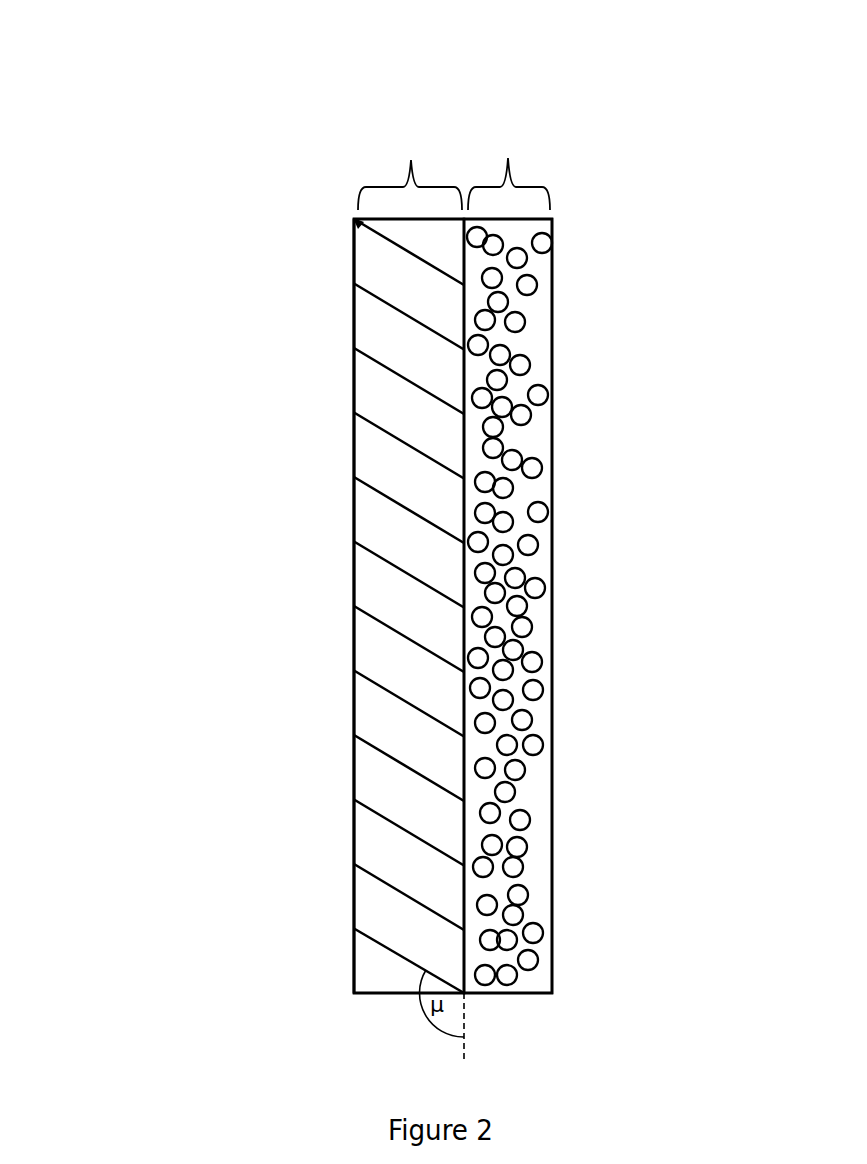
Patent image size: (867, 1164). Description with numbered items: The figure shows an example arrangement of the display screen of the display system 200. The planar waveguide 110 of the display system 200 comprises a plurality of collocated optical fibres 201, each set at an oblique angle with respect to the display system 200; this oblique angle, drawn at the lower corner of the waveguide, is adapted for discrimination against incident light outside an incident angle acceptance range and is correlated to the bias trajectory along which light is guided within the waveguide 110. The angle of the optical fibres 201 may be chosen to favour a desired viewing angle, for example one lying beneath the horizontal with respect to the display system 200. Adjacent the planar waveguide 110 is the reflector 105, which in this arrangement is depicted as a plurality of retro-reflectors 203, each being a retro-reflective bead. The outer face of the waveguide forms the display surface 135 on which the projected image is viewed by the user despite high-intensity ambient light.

The display system 200 is at (190, 29).
The planar waveguide 110 is at (395, 187).
The reflector 105 is at (533, 187).
The optical fibres 201 is at (380, 325).
The retro-reflectors 203 is at (517, 320).
The display surface 135 is at (354, 527).